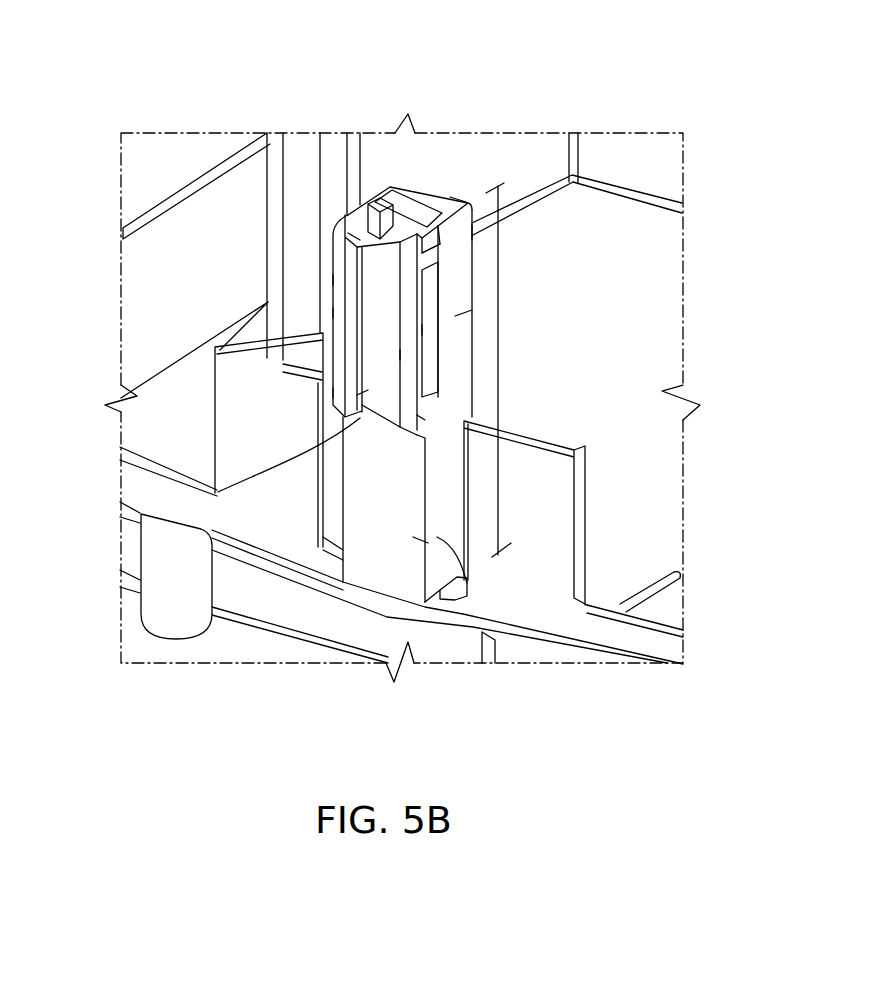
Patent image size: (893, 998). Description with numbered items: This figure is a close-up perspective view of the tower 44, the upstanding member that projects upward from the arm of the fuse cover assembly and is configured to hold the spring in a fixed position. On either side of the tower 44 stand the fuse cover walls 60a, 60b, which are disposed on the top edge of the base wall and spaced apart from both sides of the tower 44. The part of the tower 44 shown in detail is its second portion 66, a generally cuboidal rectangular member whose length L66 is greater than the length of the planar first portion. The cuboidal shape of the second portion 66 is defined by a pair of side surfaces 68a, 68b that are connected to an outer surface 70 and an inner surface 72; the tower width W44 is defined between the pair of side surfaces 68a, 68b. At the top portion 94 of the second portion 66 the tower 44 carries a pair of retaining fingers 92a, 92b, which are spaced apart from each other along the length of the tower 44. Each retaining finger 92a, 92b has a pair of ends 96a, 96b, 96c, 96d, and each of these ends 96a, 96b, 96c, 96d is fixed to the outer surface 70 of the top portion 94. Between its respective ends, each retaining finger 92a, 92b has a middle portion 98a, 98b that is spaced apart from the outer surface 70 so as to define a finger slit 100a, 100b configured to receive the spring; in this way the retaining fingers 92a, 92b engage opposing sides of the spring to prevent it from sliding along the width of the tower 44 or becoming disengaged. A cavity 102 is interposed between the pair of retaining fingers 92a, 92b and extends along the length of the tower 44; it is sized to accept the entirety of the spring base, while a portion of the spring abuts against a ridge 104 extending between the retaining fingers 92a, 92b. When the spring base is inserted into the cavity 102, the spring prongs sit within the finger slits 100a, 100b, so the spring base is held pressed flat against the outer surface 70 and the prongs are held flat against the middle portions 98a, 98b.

The tower 44 is at (539, 260).
The fuse cover wall 60a is at (236, 440).
The fuse cover wall 60b is at (541, 521).
The second portion 66 is at (356, 470).
The side surface 68a is at (175, 517).
The side surface 68b is at (457, 577).
The outer surface 70 is at (411, 566).
The inner surface 72 is at (466, 202).
The retaining finger 92a is at (340, 314).
The retaining finger 92b is at (408, 357).
The top portion 94 is at (458, 313).
The end 96a is at (362, 230).
The end 96b is at (343, 393).
The end 96c is at (427, 256).
The end 96d is at (426, 419).
The middle portion 98a is at (340, 281).
The middle portion 98b is at (408, 330).
The finger slit 100a is at (450, 197).
The finger slit 100b is at (473, 237).
The cavity 102 is at (405, 377).
The ridge 104 is at (363, 395).
The length of second portion L66 is at (498, 370).
The tower width W44 is at (412, 551).